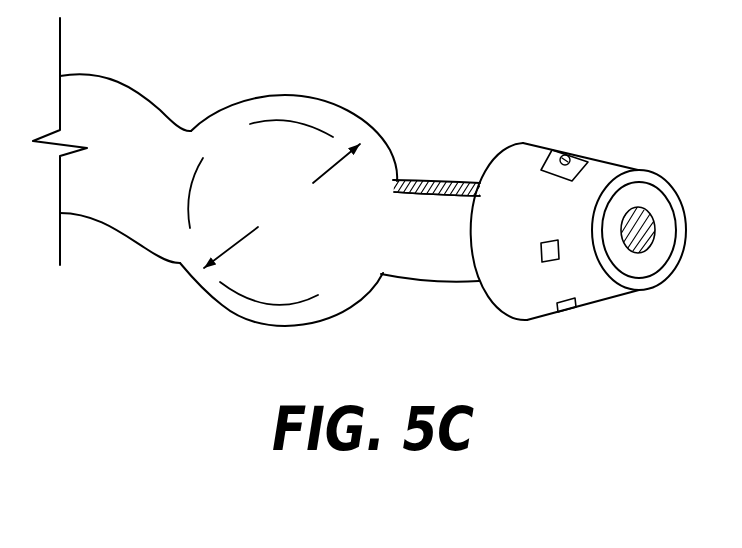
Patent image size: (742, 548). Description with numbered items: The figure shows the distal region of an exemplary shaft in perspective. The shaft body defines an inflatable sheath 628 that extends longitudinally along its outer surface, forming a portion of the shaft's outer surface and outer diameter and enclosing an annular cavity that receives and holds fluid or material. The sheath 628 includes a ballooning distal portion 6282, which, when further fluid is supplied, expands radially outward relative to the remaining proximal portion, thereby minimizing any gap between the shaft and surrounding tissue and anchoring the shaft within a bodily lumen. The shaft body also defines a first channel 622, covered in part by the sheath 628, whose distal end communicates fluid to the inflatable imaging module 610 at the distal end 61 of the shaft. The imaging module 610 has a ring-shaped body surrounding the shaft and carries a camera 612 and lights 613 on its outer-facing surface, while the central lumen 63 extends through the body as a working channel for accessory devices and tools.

The inflatable sheath 628 is at (130, 108).
The ballooning distal portion 6282 is at (220, 303).
The first channel 622 is at (430, 180).
The imaging module 610 is at (631, 143).
The camera 612 is at (564, 154).
The lights 613 is at (544, 262).
The distal end 61 is at (622, 260).
The central lumen 63 is at (655, 245).